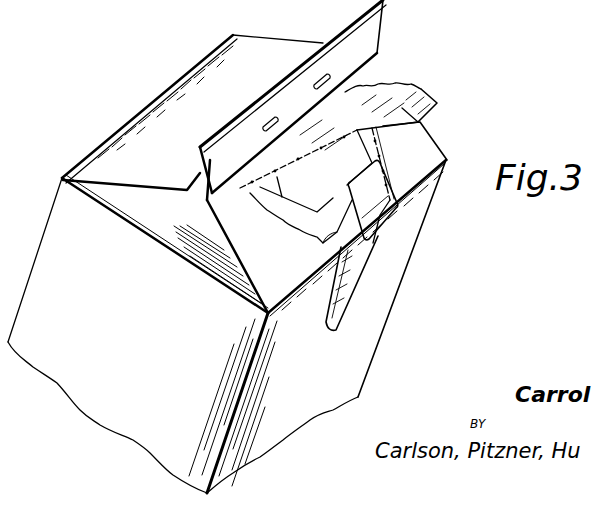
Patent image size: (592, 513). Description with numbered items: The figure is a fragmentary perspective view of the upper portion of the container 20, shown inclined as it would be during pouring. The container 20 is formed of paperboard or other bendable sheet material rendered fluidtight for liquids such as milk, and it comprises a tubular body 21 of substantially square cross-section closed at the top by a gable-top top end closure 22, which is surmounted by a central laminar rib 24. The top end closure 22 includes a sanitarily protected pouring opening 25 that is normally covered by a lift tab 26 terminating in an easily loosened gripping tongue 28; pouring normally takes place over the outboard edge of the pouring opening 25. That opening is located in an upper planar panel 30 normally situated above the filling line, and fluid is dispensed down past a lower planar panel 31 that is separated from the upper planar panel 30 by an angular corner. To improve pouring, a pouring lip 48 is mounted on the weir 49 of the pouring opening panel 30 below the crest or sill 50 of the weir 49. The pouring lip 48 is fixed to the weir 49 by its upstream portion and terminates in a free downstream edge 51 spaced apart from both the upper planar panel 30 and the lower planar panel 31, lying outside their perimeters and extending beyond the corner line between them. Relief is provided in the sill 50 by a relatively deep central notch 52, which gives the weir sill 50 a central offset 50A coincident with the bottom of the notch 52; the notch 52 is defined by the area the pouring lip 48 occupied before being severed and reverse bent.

The container 20 is at (80, 428).
The tubular body 21 is at (367, 373).
The top end closure 22 is at (437, 141).
The central laminar rib 24 is at (373, 24).
The pouring opening 25 is at (347, 157).
The lift tab 26 is at (383, 80).
The gripping tongue 28 is at (420, 103).
The upper planar panel 30 is at (238, 233).
The lower planar panel 31 is at (373, 308).
The pouring lip 48 is at (366, 222).
The weir 49 is at (330, 245).
The crest or sill of the weir 50 is at (356, 191).
The central offset 50A is at (388, 167).
The free downstream edge 51 is at (374, 243).
The central notch 52 is at (338, 200).